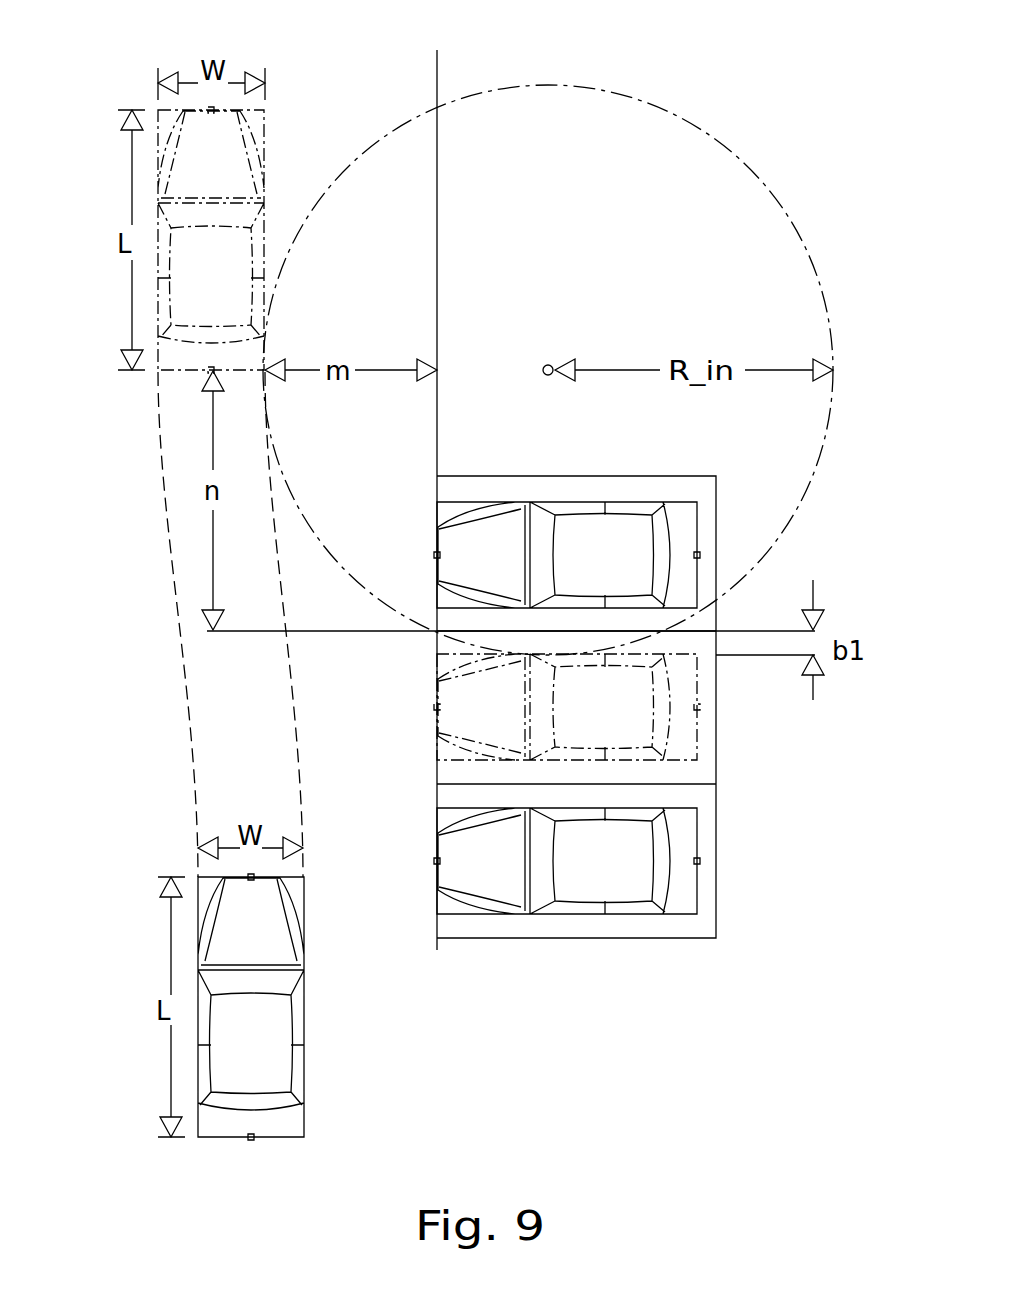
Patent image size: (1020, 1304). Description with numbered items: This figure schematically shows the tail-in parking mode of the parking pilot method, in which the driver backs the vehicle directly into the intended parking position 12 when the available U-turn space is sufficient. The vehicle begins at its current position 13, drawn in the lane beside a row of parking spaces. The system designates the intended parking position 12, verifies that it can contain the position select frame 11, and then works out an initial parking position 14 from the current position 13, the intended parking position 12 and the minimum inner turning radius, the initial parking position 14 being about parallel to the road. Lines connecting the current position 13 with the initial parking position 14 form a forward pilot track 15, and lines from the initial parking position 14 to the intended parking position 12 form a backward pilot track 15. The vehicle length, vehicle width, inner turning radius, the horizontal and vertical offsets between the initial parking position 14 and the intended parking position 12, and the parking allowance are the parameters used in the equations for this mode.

The position select frame 11 is at (698, 710).
The intended parking position 12 is at (717, 767).
The current position 13 is at (303, 968).
The initial parking position 14 is at (157, 375).
The pilot track 15 is at (182, 725).